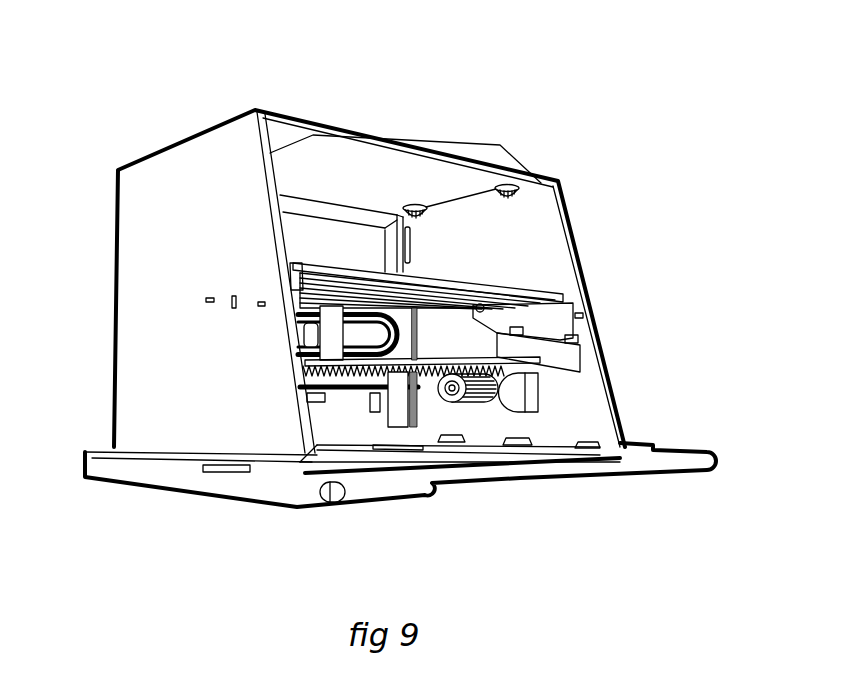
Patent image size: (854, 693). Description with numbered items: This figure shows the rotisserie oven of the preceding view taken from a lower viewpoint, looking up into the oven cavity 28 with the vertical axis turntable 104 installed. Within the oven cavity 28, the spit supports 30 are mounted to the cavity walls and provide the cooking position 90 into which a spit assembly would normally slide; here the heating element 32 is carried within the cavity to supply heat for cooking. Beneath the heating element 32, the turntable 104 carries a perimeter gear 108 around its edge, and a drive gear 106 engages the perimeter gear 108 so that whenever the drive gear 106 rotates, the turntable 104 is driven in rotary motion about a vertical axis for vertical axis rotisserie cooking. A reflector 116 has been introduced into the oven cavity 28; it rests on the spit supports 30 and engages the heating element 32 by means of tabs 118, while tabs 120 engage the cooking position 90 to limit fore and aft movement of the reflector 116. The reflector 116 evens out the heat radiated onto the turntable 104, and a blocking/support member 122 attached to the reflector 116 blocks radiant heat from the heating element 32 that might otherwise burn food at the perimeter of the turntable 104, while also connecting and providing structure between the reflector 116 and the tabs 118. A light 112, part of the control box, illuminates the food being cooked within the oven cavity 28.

The oven cavity 28 is at (542, 256).
The spit supports 30 is at (555, 320).
The heating element 32 is at (325, 377).
The cooking position 90 is at (473, 307).
The vertical axis turntable 104 is at (403, 367).
The drive gear 106 is at (475, 398).
The perimeter gear 108 is at (372, 378).
The light 112 is at (513, 393).
The reflector 116 is at (413, 282).
The tabs 118 is at (313, 338).
The tabs 120 is at (487, 316).
The blocking/support member 122 is at (330, 345).